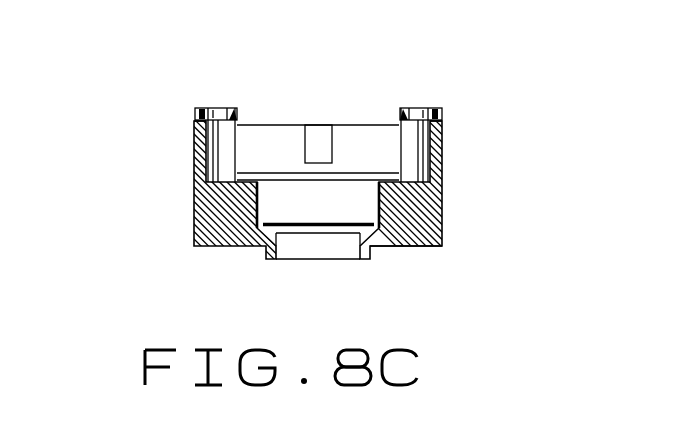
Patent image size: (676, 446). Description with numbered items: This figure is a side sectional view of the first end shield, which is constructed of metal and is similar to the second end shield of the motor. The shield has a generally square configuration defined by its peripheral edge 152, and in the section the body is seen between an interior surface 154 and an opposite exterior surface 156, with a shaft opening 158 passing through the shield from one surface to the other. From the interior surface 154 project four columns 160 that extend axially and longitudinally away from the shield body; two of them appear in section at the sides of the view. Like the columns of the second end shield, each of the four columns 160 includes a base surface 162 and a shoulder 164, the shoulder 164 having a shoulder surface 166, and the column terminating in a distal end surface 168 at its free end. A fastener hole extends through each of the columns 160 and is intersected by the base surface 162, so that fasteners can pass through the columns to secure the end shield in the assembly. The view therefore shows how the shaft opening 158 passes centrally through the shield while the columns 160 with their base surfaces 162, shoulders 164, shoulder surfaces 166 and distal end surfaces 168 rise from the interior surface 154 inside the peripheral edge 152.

The peripheral edge 152 is at (442, 200).
The interior surface 154 is at (392, 182).
The exterior surface 156 is at (414, 247).
The shaft opening 158 is at (318, 260).
The column 160 is at (195, 121).
The base surface 162 is at (232, 108).
The shoulder 164 is at (196, 110).
The shoulder surface 166 is at (213, 107).
The distal end surface 168 is at (203, 107).